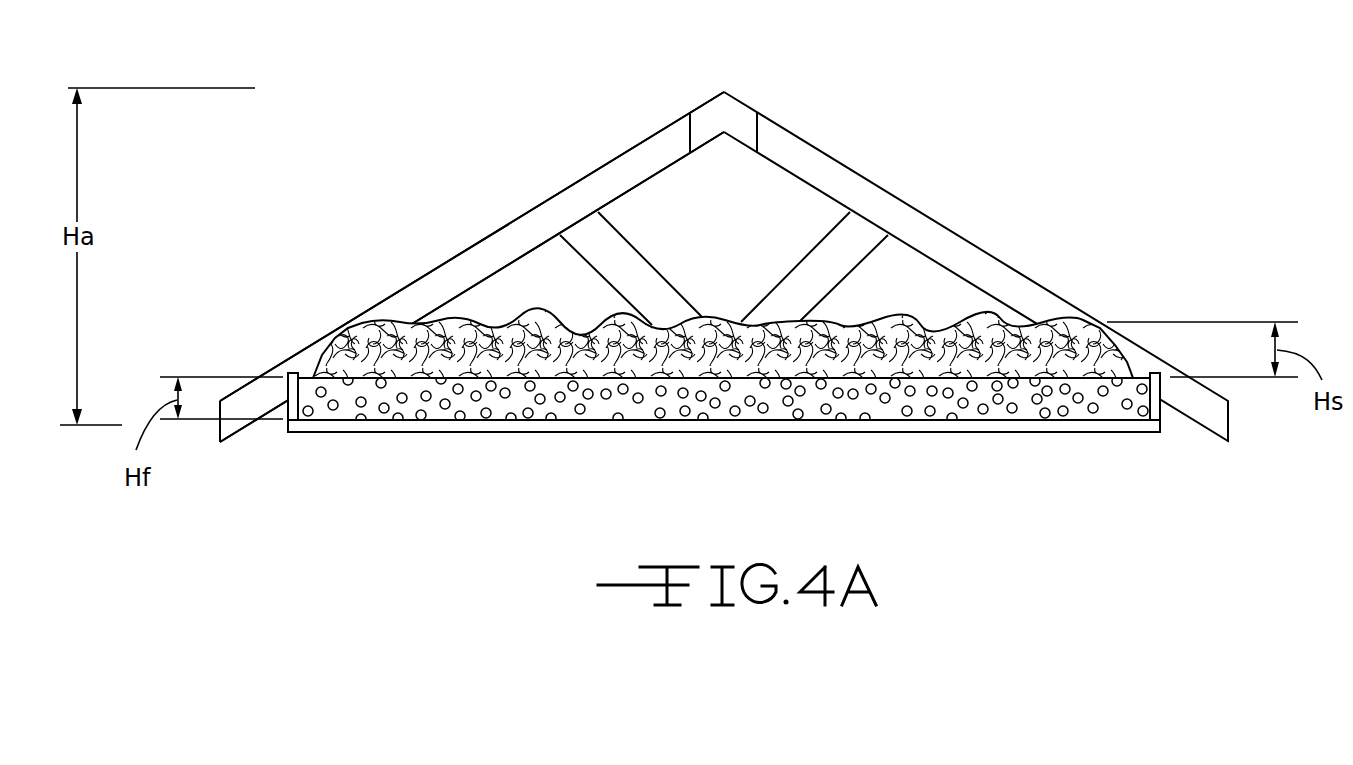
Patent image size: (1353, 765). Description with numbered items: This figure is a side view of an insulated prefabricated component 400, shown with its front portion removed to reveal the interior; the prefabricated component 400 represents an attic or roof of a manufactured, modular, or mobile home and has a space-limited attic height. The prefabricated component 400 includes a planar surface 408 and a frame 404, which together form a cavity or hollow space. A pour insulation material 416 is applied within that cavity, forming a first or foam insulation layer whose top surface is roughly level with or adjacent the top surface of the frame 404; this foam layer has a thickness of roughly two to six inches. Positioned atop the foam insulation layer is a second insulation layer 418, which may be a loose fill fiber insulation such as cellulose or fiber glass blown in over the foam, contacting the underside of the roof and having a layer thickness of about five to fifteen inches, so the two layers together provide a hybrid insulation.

The prefabricated component 400 is at (960, 158).
The frame 404 is at (285, 388).
The planar surface 408 is at (930, 430).
The pour insulation material 416 is at (1108, 398).
The second insulation layer 418 is at (1017, 343).